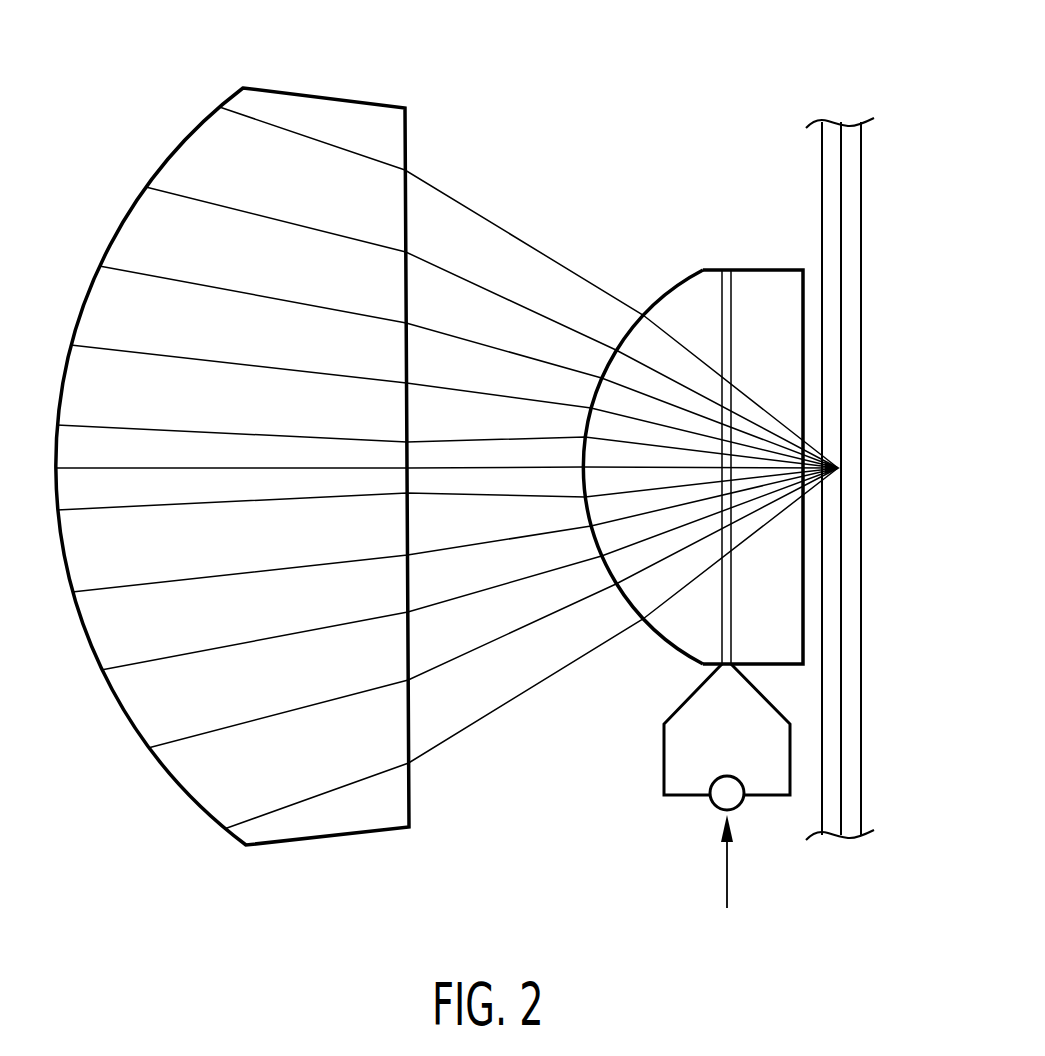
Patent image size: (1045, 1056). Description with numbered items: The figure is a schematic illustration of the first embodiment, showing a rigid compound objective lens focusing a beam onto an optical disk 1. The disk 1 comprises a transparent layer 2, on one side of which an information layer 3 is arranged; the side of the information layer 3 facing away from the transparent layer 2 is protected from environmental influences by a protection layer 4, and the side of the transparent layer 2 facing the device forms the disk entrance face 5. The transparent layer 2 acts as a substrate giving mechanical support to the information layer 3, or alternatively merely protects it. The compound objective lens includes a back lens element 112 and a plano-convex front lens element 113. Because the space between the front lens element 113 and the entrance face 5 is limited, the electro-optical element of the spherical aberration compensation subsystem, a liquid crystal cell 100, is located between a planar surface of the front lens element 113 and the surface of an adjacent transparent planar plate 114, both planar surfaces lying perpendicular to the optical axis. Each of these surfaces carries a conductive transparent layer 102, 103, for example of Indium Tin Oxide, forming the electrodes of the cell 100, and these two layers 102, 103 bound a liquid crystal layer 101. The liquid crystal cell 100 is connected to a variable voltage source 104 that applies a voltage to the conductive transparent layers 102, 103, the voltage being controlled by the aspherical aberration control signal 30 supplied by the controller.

The optical disk 1 is at (874, 102).
The transparent layer 2 is at (838, 160).
The information layer 3 is at (843, 190).
The protection layer 4 is at (849, 212).
The disk entrance face 5 is at (830, 237).
The aspherical aberration control signal 30 is at (727, 885).
The liquid crystal cell 100 is at (722, 275).
The liquid crystal layer 101 is at (728, 607).
The conductive transparent layer 102 is at (723, 592).
The conductive transparent layer 103 is at (729, 635).
The variable voltage source 104 is at (713, 787).
The back lens element 112 is at (343, 100).
The front lens element 113 is at (680, 296).
The front lens element 114 is at (761, 284).